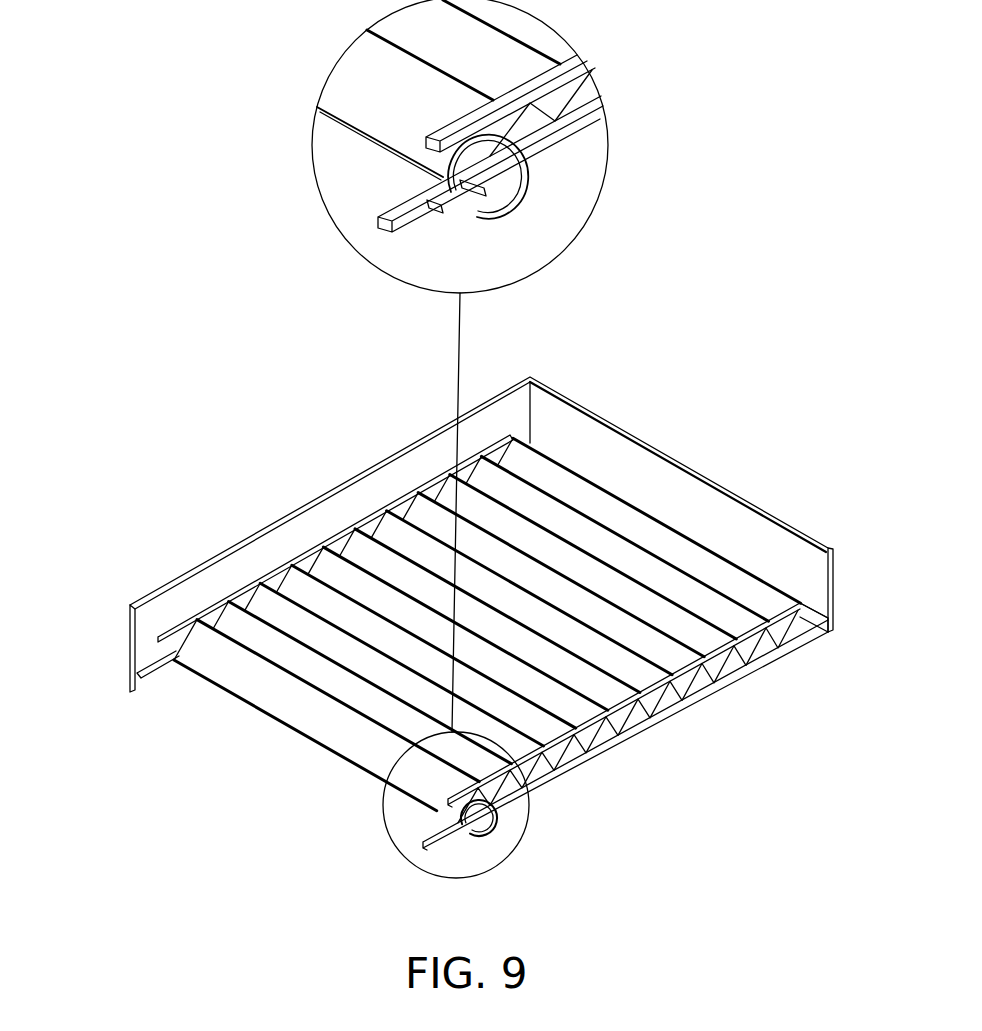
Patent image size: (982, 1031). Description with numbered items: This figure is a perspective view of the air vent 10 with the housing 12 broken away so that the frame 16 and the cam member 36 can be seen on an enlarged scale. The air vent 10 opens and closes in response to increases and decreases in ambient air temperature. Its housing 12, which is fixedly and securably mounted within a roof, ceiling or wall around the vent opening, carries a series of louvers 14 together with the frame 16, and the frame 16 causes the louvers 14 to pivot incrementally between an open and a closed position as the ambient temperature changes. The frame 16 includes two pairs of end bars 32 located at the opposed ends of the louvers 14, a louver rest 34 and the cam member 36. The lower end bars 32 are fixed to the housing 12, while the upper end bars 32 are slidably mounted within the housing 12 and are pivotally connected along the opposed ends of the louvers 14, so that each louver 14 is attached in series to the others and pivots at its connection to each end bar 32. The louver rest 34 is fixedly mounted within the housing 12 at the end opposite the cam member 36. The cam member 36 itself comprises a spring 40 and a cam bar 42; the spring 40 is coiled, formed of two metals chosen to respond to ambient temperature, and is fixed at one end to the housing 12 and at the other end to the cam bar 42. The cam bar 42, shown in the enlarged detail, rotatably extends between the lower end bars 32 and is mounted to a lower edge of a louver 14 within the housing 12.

The air vent 10 is at (708, 434).
The housing 12 is at (741, 491).
The louvers 14 is at (263, 680).
The frame 16 is at (729, 689).
The end bars 32 is at (130, 658).
The louver rest 34 is at (815, 628).
The cam member 36 is at (499, 849).
The spring 40 is at (507, 199).
The cam bar 42 is at (467, 192).